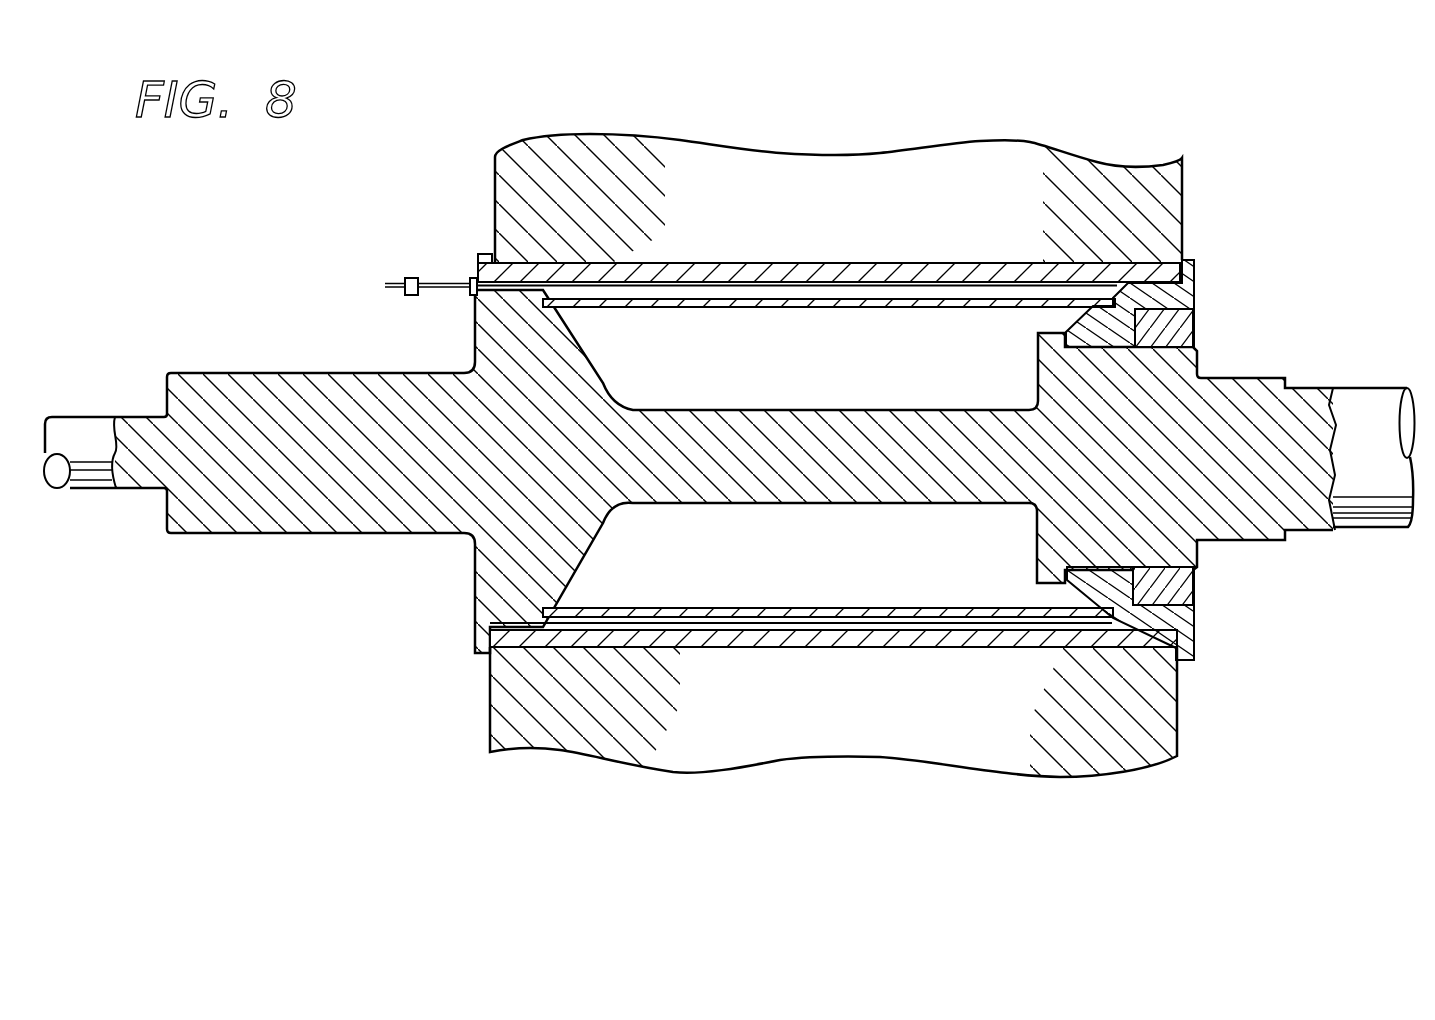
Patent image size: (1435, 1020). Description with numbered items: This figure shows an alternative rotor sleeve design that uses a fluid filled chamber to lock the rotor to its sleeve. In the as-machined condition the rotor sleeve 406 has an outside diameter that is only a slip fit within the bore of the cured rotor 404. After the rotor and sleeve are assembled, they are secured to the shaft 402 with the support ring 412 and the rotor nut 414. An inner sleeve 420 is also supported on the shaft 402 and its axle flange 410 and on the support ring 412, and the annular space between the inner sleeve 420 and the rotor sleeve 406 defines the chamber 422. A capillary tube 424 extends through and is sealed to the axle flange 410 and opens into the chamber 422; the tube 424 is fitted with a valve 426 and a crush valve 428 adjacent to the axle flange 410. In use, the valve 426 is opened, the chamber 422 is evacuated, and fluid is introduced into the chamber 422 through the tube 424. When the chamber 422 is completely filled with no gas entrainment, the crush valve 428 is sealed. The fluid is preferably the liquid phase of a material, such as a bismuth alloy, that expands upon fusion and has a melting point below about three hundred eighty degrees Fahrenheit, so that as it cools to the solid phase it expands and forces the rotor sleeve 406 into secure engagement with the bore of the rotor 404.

The shaft 402 is at (1250, 378).
The cured rotor 404 is at (1183, 198).
The rotor sleeve 406 is at (893, 263).
The axle flange 410 is at (473, 587).
The support ring 412 is at (1200, 635).
The rotor nut 414 is at (1197, 583).
The inner sleeve 420 is at (857, 310).
The chamber 422 is at (735, 288).
The capillary tube 424 is at (392, 293).
The valve 426 is at (413, 277).
The crush valve 428 is at (473, 290).